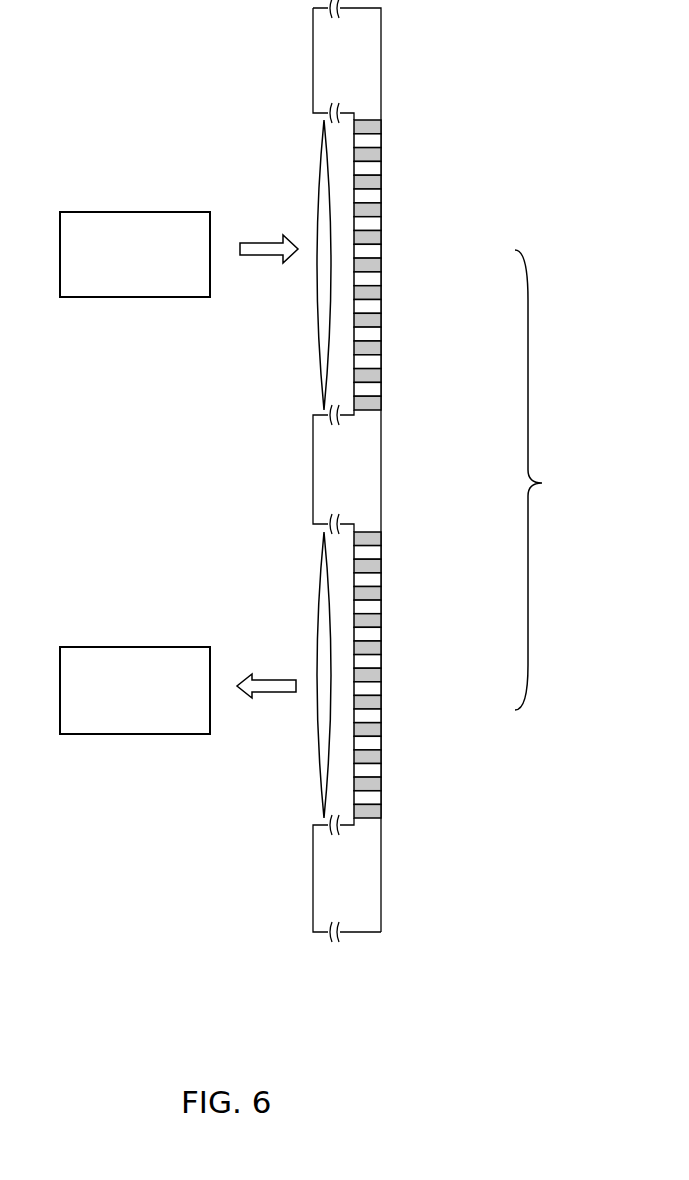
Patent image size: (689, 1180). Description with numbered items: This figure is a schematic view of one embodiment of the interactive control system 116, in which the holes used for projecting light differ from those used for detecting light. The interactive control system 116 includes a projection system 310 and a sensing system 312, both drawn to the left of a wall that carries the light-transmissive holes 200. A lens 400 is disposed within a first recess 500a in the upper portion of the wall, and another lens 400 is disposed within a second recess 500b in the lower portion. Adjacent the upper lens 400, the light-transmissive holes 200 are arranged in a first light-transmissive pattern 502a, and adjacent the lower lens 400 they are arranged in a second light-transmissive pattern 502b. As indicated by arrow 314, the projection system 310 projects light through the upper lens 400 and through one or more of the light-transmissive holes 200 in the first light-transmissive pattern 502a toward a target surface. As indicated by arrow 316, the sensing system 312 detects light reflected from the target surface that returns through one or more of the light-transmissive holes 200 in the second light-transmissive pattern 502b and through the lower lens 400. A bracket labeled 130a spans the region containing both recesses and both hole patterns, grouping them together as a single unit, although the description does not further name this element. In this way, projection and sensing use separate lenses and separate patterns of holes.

The interactive control system 116 is at (107, 472).
The optical module 130a is at (557, 480).
The light-transmissive holes 200 is at (380, 238).
The projection system 310 is at (88, 298).
The sensing system 312 is at (105, 735).
The arrow 314 is at (283, 258).
The arrow 316 is at (280, 695).
The lens 400 is at (320, 152).
The first recess 500a is at (346, 140).
The second recess 500b is at (346, 552).
The first light-transmissive pattern 502a is at (427, 260).
The second light-transmissive pattern 502b is at (412, 681).